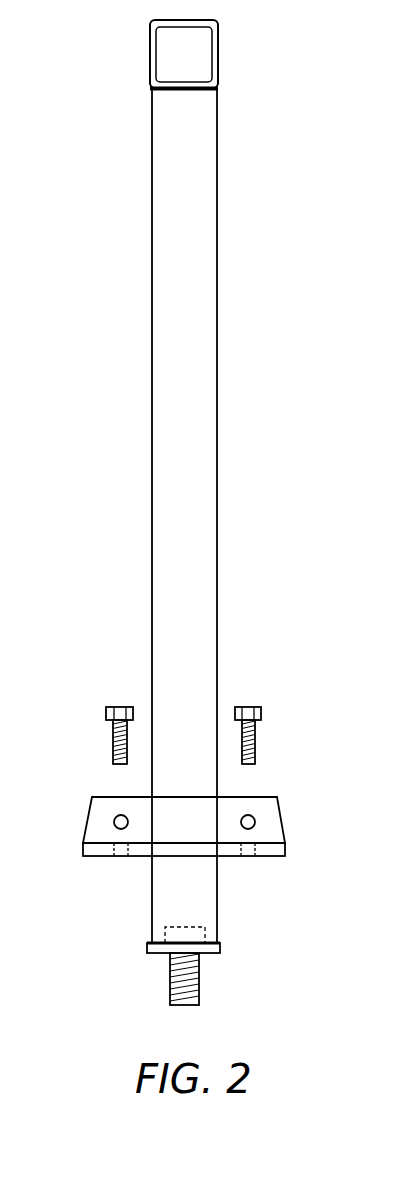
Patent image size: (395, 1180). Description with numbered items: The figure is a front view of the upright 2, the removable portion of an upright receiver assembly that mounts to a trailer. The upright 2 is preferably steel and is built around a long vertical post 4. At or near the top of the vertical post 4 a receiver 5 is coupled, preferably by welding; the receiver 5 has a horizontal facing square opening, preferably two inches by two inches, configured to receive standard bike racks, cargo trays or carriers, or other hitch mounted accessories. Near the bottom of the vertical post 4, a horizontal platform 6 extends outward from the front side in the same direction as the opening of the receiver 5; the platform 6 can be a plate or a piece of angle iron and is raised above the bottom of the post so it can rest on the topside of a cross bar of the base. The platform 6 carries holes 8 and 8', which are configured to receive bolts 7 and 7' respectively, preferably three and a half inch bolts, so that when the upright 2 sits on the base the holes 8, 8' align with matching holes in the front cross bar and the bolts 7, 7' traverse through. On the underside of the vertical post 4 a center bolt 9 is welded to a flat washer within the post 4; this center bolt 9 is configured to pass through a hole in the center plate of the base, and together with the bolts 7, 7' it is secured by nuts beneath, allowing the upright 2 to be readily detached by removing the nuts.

The upright 2 is at (218, 536).
The vertical post 4 is at (192, 414).
The receiver 5 is at (203, 56).
The horizontal platform 6 is at (282, 821).
The bolt 7 is at (85, 734).
The bolt 7' is at (292, 734).
The hole 8 is at (86, 880).
The hole 8' is at (286, 863).
The center bolt 9 is at (198, 983).